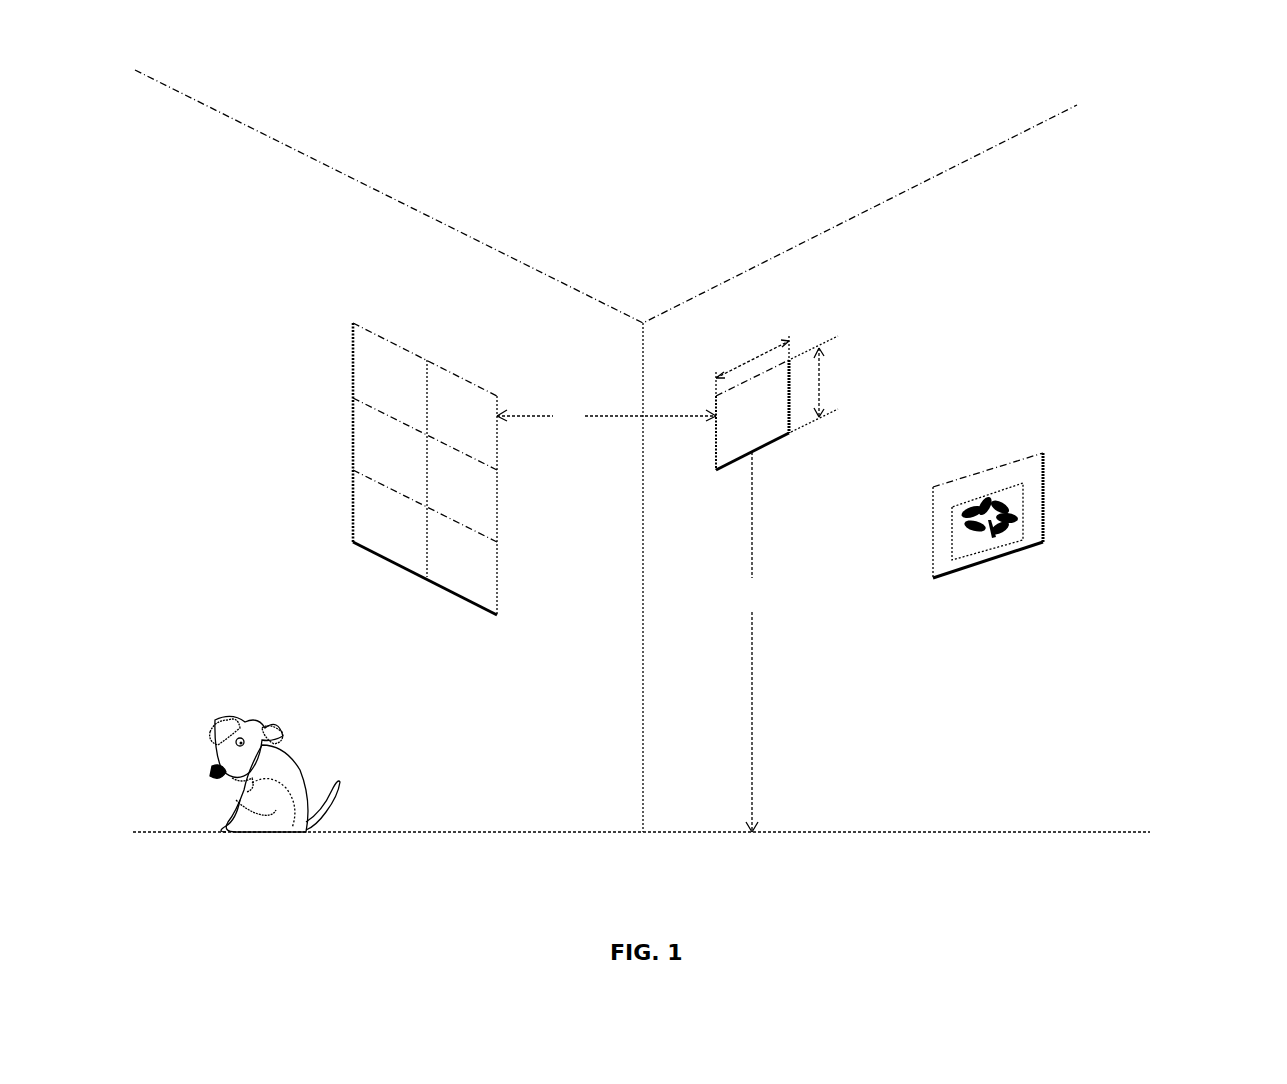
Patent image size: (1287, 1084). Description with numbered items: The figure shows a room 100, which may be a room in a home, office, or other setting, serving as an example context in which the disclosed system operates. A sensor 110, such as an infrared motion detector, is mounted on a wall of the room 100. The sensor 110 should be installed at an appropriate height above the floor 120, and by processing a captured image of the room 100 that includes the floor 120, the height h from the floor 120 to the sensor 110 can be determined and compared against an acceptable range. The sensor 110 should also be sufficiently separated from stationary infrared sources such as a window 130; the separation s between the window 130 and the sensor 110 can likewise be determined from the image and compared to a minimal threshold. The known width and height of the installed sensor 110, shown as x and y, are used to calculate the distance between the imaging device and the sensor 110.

The room 100 is at (1232, 158).
The sensor 110 is at (712, 452).
The floor 120 is at (997, 830).
The window 130 is at (352, 350).